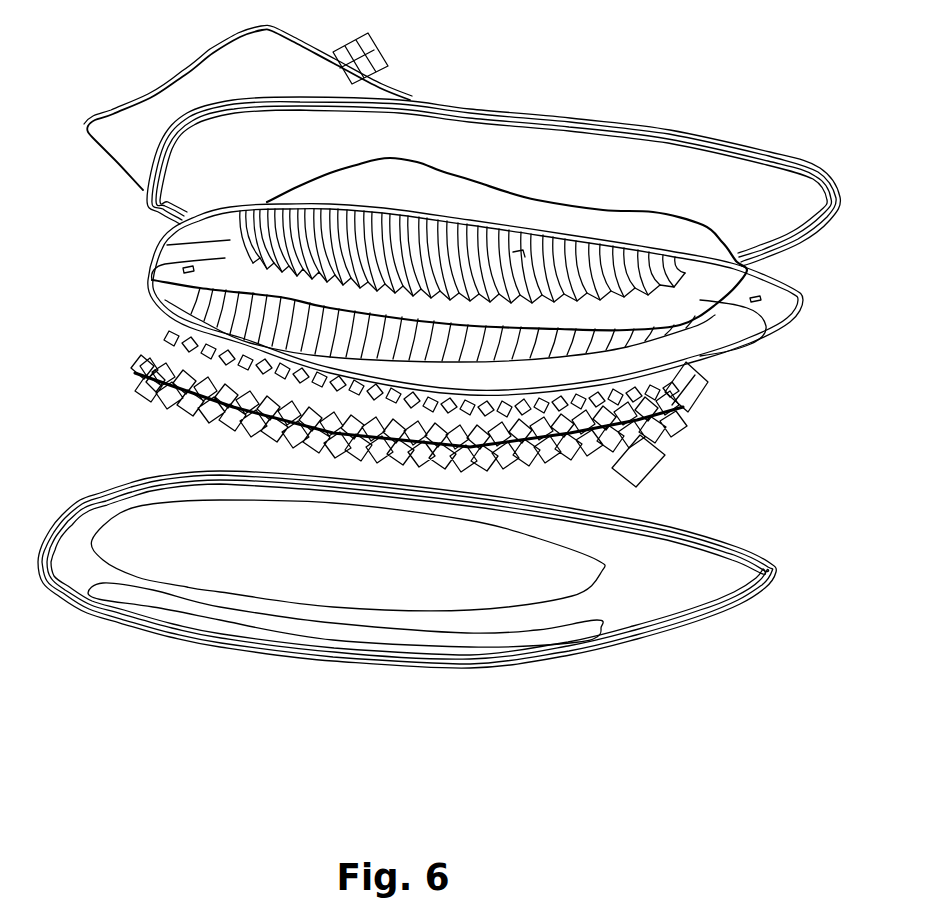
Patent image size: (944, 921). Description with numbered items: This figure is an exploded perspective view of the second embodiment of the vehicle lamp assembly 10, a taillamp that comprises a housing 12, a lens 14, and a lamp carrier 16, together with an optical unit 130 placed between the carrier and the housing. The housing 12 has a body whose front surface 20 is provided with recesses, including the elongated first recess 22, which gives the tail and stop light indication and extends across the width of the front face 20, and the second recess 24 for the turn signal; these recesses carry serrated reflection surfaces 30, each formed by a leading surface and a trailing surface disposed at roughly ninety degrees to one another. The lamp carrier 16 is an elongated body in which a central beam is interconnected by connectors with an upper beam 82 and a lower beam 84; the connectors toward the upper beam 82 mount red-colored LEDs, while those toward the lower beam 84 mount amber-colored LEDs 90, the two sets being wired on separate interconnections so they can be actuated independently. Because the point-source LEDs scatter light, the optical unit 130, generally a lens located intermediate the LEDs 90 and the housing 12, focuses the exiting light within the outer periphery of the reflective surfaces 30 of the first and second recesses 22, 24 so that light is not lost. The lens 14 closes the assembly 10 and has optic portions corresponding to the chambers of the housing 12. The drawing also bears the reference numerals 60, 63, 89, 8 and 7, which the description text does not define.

The vehicle lamp assembly 10 is at (32, 32).
The housing 12 is at (843, 347).
The lens 14 is at (720, 616).
The lamp carrier 16 is at (672, 440).
The surface 20 is at (167, 243).
The first recess 22 is at (517, 255).
The second recess 24 is at (730, 328).
The reflection surfaces 30 is at (210, 297).
The tray recess 60 is at (317, 592).
The tray groove 63 is at (335, 662).
The upper beam 82 is at (690, 406).
The lower beam 84 is at (600, 470).
The link 89 is at (153, 373).
The amber-colored LED 90 is at (155, 381).
The optical unit 130 is at (162, 328).
The band 8 is at (147, 382).
The section line 7 is at (498, 80).